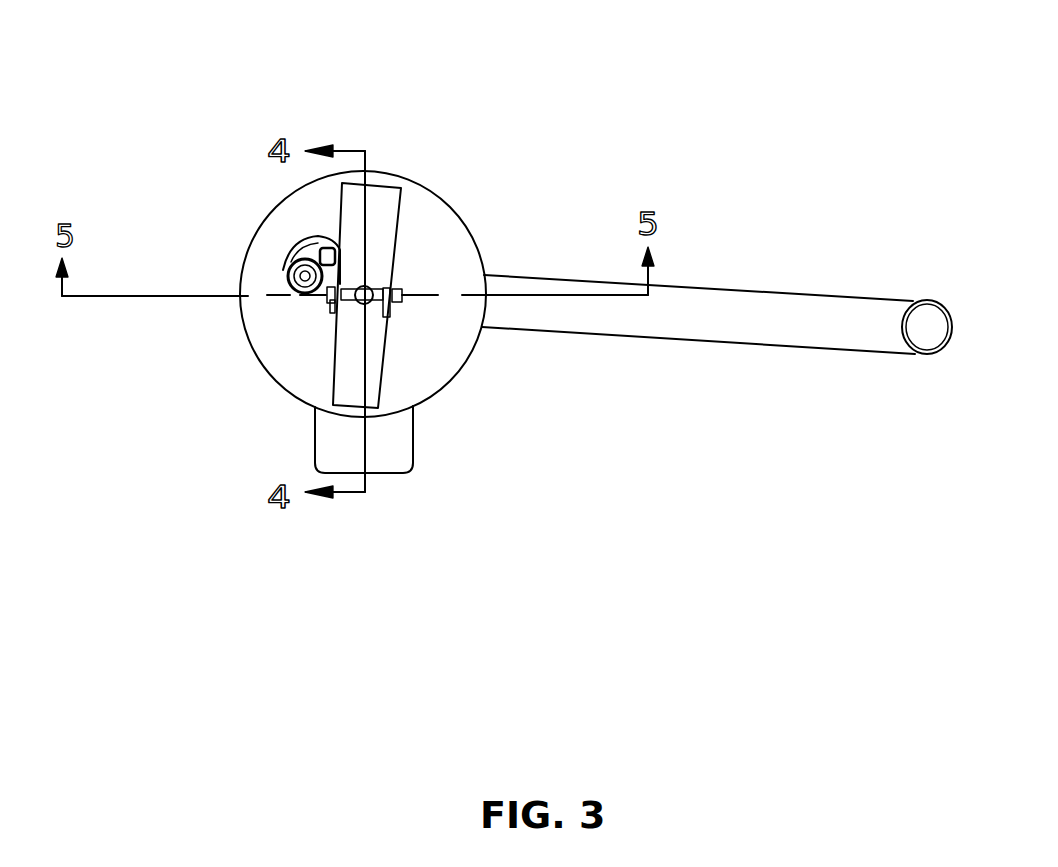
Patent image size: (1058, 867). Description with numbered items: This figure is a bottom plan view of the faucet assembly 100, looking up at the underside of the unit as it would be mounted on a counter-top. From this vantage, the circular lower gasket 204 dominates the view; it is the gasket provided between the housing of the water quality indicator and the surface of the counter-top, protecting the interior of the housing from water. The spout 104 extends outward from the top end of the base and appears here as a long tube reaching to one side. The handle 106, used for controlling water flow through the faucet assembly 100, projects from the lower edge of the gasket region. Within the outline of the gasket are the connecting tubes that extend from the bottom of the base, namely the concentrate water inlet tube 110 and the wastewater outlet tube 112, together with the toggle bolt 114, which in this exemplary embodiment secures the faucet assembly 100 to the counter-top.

The faucet assembly 100 is at (646, 95).
The spout 104 is at (750, 333).
The handle 106 is at (405, 452).
The concentrate water inlet tube 110 is at (287, 270).
The wastewater outlet tube 112 is at (322, 252).
The toggle bolt 114 is at (390, 225).
The lower gasket 204 is at (280, 365).